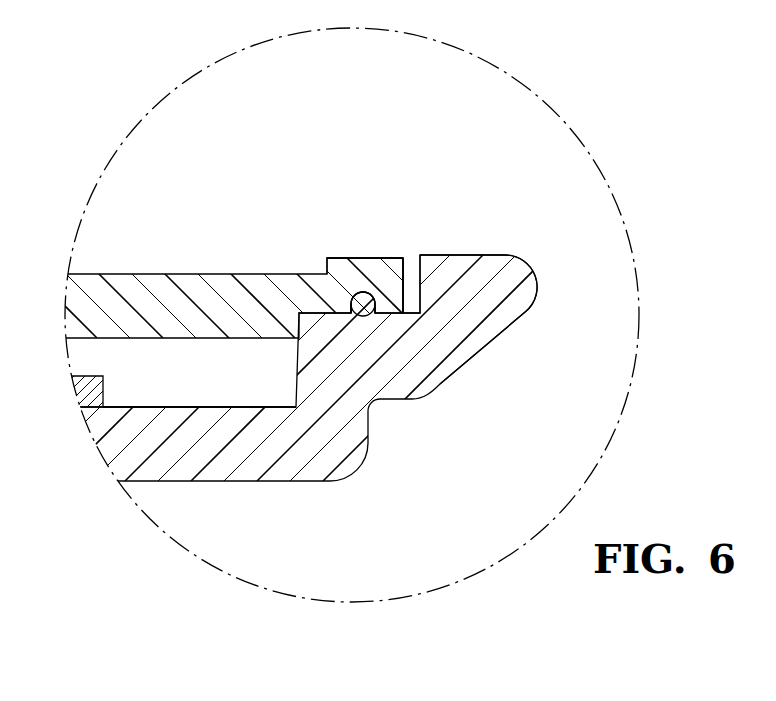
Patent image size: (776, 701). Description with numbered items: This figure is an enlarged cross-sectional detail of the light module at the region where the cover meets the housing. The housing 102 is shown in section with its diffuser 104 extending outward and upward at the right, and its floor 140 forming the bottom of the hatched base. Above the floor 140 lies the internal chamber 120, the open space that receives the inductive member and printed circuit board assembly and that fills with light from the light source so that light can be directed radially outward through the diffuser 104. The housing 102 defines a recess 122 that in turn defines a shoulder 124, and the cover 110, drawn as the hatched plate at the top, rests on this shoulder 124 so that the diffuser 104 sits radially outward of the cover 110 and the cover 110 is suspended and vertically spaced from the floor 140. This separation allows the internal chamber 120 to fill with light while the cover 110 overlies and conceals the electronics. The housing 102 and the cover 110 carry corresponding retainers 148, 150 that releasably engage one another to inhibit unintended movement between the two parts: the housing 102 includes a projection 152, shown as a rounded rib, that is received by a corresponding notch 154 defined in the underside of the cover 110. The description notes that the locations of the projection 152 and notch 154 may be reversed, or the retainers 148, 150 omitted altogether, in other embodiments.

The housing 102 is at (335, 499).
The diffuser 104 is at (511, 276).
The cover 110 is at (232, 240).
The internal chamber 120 is at (254, 386).
The recess 122 is at (410, 285).
The shoulder 124 is at (395, 313).
The floor 140 is at (185, 401).
The retainer 148 is at (363, 325).
The retainer 150 is at (365, 275).
The projection 152 is at (372, 299).
The notch 154 is at (361, 292).